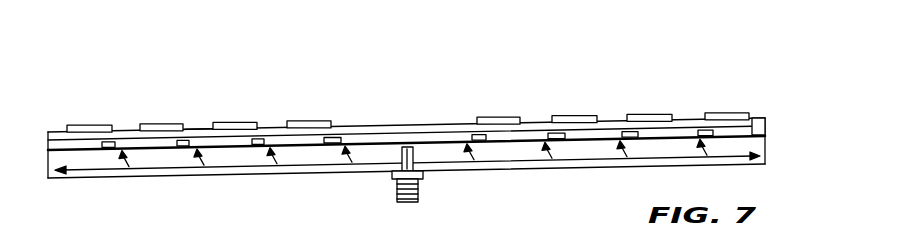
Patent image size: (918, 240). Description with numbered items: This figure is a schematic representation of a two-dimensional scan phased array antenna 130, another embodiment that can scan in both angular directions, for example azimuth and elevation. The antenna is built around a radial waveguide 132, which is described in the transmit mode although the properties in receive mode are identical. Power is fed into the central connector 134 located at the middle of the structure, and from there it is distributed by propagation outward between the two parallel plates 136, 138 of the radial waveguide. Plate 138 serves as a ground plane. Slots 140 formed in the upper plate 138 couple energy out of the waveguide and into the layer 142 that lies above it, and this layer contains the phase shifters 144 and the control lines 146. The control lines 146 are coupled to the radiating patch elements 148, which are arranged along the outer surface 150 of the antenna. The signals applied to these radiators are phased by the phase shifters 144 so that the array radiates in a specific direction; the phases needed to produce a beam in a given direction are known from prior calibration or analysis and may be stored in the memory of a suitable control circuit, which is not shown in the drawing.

The two-dimensional scan phased array antenna 130 is at (411, 97).
The radial waveguide 132 is at (767, 148).
The central connector 134 is at (418, 193).
The parallel plate 136 is at (606, 129).
The parallel plate 138 is at (585, 168).
The slots 140 is at (351, 136).
The layer 142 is at (758, 117).
The phase shifters 144 is at (263, 128).
The control lines 146 is at (207, 128).
The radiating patch elements 148 is at (156, 124).
The outer surface 150 is at (440, 124).